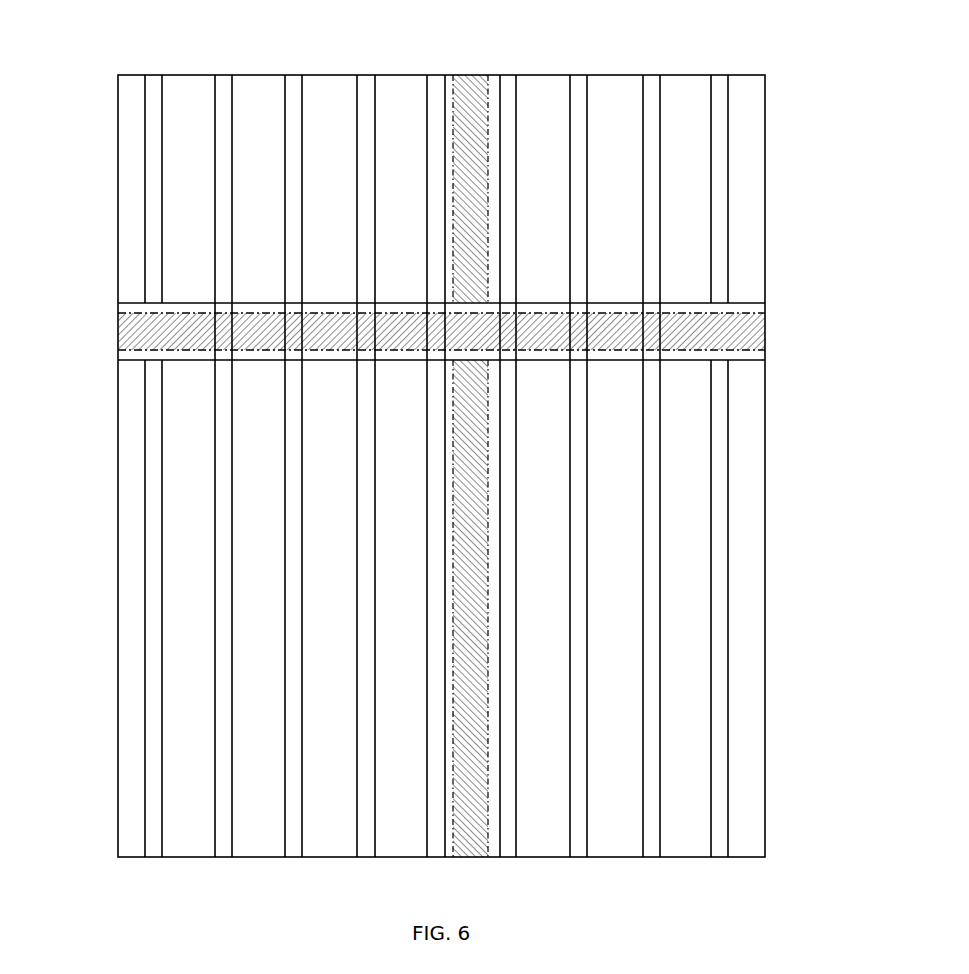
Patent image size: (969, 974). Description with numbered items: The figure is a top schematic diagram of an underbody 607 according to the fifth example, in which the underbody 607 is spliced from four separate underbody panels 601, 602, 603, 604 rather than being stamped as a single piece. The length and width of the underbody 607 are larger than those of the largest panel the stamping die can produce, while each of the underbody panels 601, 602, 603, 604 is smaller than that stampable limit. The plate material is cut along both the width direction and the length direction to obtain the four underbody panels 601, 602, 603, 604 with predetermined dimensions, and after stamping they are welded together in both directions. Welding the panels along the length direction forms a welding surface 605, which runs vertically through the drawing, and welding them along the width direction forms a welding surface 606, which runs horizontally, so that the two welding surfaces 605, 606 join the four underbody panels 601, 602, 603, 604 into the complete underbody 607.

The underbody panel 601 is at (140, 238).
The underbody panel 602 is at (727, 198).
The underbody panel 603 is at (152, 584).
The underbody panel 604 is at (730, 595).
The welding surface 605 is at (472, 107).
The welding surface 606 is at (128, 343).
The underbody 607 is at (767, 461).